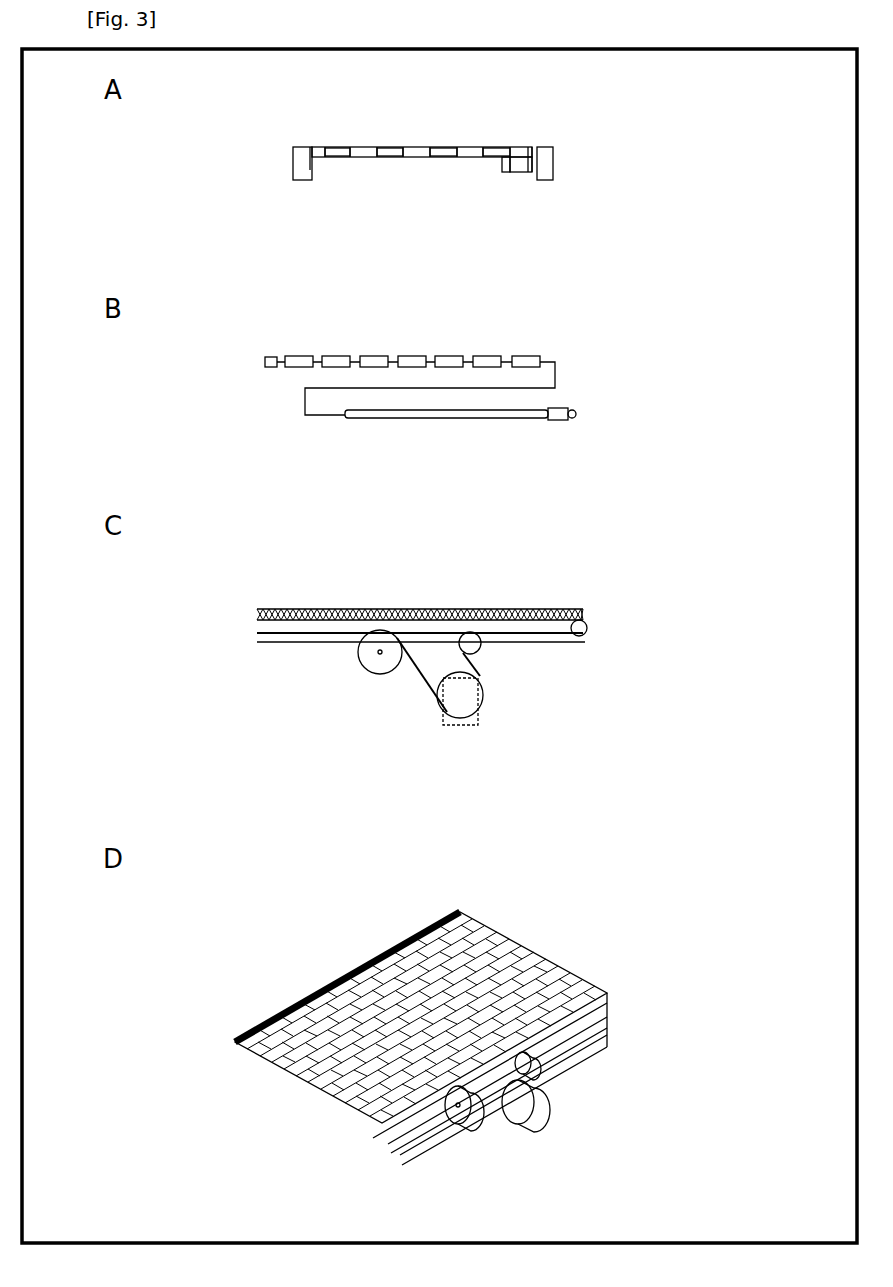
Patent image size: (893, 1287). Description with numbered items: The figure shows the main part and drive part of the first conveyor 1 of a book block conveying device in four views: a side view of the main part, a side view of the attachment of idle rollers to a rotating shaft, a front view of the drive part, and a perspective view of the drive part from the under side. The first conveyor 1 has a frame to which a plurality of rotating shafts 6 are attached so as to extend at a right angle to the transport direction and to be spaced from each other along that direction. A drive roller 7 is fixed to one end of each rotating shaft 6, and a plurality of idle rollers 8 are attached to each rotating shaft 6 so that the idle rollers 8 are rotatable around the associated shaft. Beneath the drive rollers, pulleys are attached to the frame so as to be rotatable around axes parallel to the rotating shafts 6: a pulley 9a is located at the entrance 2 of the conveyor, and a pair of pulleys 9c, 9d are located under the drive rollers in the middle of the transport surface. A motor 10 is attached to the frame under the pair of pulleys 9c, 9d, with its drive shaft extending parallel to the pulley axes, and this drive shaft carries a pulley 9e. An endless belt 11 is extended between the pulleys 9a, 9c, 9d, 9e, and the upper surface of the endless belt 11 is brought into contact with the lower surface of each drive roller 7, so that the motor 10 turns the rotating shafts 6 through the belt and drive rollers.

The first conveyor 1 is at (378, 590).
The entrance 2 is at (584, 614).
The rotating shaft 6 is at (437, 418).
The drive roller 7 is at (519, 150).
The idle roller 8 is at (337, 147).
The pulley 9a is at (588, 624).
The pulley 9c is at (365, 661).
The pulley 9d is at (481, 651).
The pulley 9e is at (437, 678).
The motor 10 is at (502, 165).
The endless belt 11 is at (521, 172).